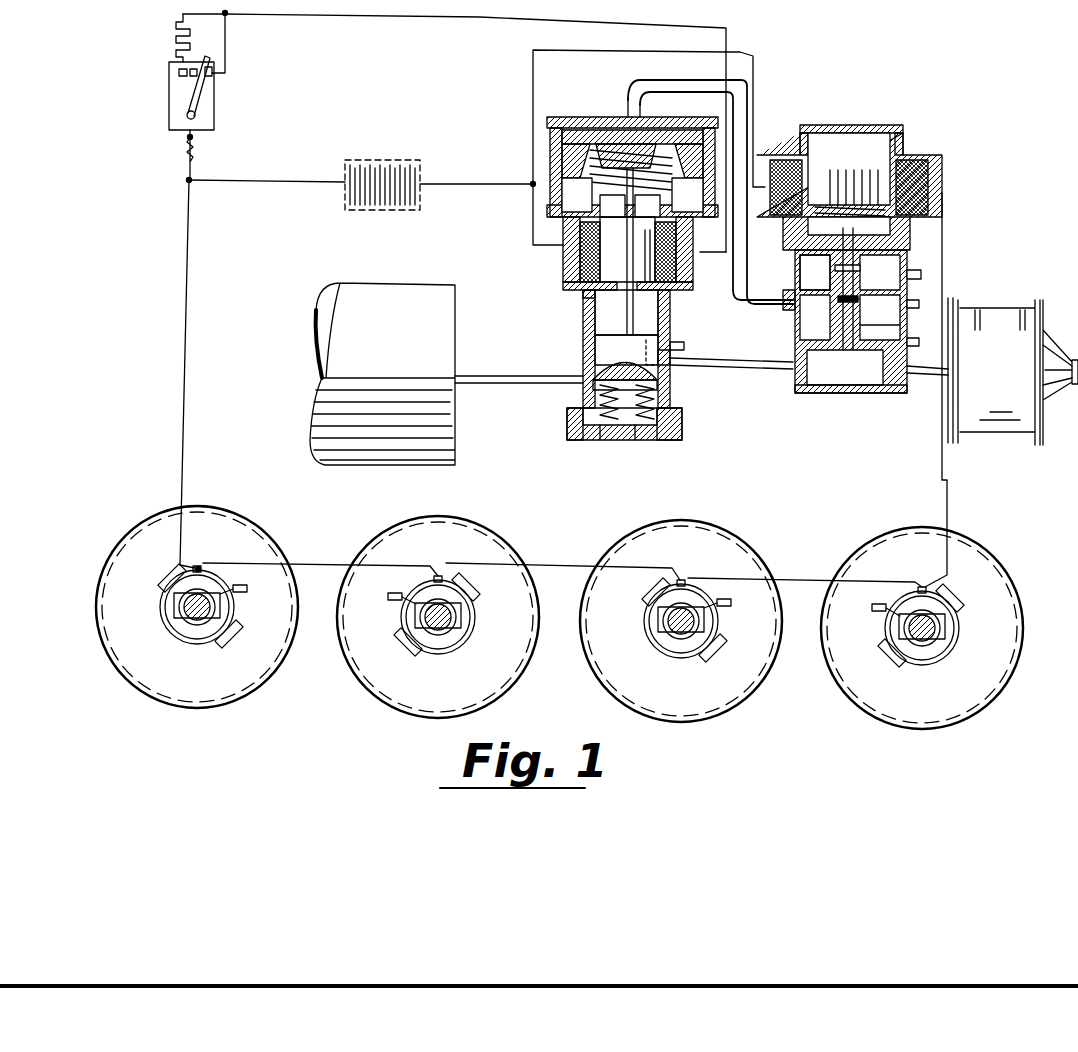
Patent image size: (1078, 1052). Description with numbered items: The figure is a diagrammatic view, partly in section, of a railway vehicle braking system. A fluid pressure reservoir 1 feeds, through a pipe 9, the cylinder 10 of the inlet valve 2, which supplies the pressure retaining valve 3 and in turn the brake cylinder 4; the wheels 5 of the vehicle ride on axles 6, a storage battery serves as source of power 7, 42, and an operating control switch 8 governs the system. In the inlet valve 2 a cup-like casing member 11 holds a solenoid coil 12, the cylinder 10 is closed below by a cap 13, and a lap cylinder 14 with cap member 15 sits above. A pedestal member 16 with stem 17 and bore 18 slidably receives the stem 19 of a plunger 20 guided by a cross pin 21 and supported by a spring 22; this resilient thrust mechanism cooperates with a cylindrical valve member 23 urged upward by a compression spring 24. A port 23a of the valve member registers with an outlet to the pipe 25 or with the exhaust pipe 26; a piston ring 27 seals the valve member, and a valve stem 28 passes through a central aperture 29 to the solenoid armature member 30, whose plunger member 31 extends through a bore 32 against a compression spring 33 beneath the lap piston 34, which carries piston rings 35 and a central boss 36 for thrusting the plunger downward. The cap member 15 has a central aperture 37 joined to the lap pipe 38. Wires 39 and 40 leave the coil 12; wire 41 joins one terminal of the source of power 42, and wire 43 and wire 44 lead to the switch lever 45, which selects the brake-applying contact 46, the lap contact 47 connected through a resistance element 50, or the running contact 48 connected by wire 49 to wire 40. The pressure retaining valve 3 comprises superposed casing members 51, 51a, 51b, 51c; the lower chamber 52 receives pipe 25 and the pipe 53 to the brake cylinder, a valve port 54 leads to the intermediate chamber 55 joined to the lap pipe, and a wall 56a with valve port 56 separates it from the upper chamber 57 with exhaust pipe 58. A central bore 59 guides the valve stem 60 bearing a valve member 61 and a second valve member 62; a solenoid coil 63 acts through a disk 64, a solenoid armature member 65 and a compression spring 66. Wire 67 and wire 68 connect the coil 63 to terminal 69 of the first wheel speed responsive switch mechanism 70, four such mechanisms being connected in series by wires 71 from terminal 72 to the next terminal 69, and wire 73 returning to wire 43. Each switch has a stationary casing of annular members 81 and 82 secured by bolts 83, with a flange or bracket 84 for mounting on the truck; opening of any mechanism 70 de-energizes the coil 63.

The fluid pressure reservoir 1 is at (445, 338).
The fluid pressure inlet or admission valve 2 is at (642, 271).
The pressure retaining valve 3 is at (865, 255).
The fluid pressure brake cylinder 4 is at (1008, 305).
The wheels 5 is at (262, 540).
The axles 6 is at (197, 612).
The source of power 7 is at (410, 160).
The operating control switch 8 is at (169, 100).
The pipe 9 is at (518, 374).
The cylinder 10 is at (595, 320).
The cup-like casing member 11 is at (563, 262).
The electromagnetic solenoid coil 12 is at (672, 300).
The screw-threaded cap 13 is at (608, 442).
The lap cylinder 14 is at (550, 178).
The cap member 15 is at (558, 117).
The pedestal member 16 is at (580, 440).
The stem 17 is at (636, 442).
The central vertical bore 18 is at (665, 394).
The stem 19 is at (583, 408).
The plunger 20 is at (600, 370).
The cross pin 21 is at (670, 440).
The spring 22 is at (567, 438).
The cylindrical valve member 23 is at (595, 348).
The port 23a is at (670, 375).
The compression spring 24 is at (590, 394).
The pipe 25 is at (740, 370).
The exhaust pipe 26 is at (684, 345).
The piston ring 27 is at (644, 252).
The valve stem 28 is at (583, 294).
The central aperture 29 is at (563, 285).
The solenoid armature member 30 is at (627, 249).
The plunger member 31 is at (612, 206).
The bore or aperture 32 is at (648, 206).
The compression spring 33 is at (646, 181).
The lap piston 34 is at (660, 140).
The piston rings 35 is at (555, 158).
The central boss 36 is at (577, 194).
The central aperture 37 is at (628, 110).
The lap pipe 38 is at (748, 300).
The wire 39 is at (533, 230).
The wire 40 is at (430, 17).
The wire 41 is at (453, 184).
The source of power 42 is at (368, 165).
The wire 43 is at (293, 182).
The wire 44 is at (187, 170).
The switch lever 45 is at (212, 88).
The contact 46 is at (176, 72).
The intermediate contact 47 is at (194, 68).
The contact 48 is at (214, 66).
The wire 49 is at (227, 42).
The resistance element 50 is at (176, 26).
The casing member 51 is at (795, 345).
The casing member 51a is at (797, 276).
The casing member 51b is at (785, 262).
The casing member 51c is at (802, 138).
The lower chamber 52 is at (818, 393).
The pipe 53 is at (918, 393).
The valve port 54 is at (845, 367).
The intermediate chamber 55 is at (919, 304).
The valve port 56 is at (880, 317).
The wall 56a is at (880, 329).
The upper chamber 57 is at (900, 262).
The exhaust pipe 58 is at (912, 280).
The central bore 59 is at (880, 272).
The valve stem 60 is at (817, 272).
The valve member 61 is at (815, 317).
The second valve member 62 is at (838, 300).
The solenoid coil 63 is at (945, 185).
The disk 64 is at (905, 240).
The solenoid armature member 65 is at (838, 176).
The compression spring 66 is at (892, 222).
The wire 67 is at (750, 92).
The wire 68 is at (944, 268).
The terminal 69 is at (206, 570).
The wheel speed responsive switch mechanism 70 is at (563, 617).
The wires 71 is at (320, 563).
The terminal 72 is at (200, 566).
The wire 73 is at (186, 385).
The annular casing member 81 is at (222, 604).
The annular casing member 82 is at (180, 634).
The bolts 83 is at (157, 588).
The flange or bracket 84 is at (247, 588).